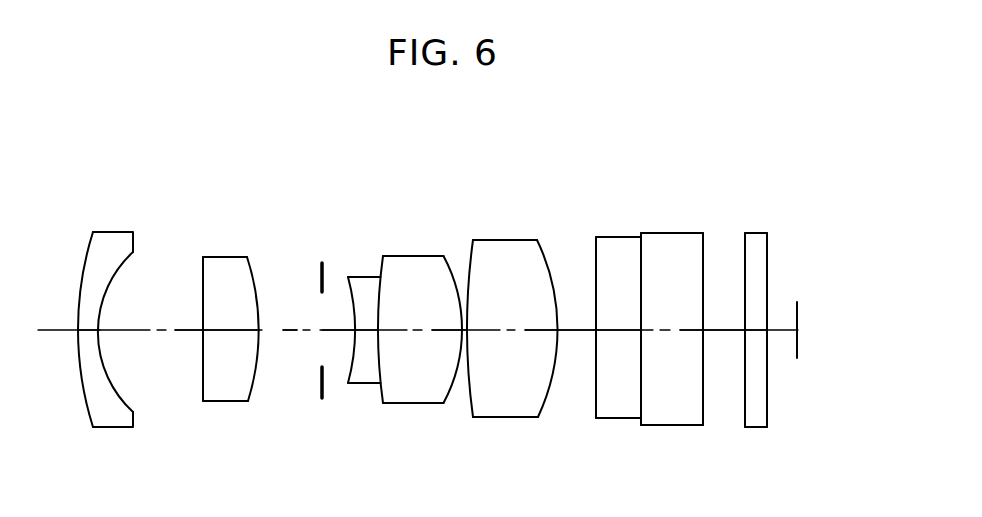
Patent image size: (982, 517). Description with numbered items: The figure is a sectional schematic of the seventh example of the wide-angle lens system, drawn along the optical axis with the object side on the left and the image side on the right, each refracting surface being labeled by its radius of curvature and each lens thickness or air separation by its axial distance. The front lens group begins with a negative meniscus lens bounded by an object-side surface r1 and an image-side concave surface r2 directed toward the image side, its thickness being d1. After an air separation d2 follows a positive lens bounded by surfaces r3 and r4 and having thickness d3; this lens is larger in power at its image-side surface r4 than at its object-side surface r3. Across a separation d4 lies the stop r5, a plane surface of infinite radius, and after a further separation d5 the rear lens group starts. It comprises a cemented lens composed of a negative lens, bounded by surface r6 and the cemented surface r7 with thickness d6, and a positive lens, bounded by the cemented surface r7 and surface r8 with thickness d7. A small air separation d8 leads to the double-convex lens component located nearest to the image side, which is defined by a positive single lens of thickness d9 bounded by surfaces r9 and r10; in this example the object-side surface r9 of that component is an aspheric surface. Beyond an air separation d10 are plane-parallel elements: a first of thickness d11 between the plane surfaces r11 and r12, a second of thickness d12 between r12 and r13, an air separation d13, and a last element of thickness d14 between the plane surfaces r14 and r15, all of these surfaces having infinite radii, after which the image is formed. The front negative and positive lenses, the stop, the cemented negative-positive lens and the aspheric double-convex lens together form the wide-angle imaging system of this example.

The radius of curvature of first lens surface r1 is at (86, 257).
The radius of curvature of second lens surface r2 is at (118, 272).
The radius of curvature of third lens surface r3 is at (203, 277).
The radius of curvature of fourth lens surface r4 is at (252, 278).
The stop r5 is at (320, 273).
The radius of curvature of sixth lens surface r6 is at (352, 297).
The radius of curvature of seventh lens surface r7 is at (380, 290).
The radius of curvature of eighth lens surface r8 is at (454, 283).
The aspheric object-side surface of double-convex lens component r9 is at (469, 272).
The radius of curvature of tenth lens surface r10 is at (543, 258).
The radius of curvature of eleventh lens surface r11 is at (596, 263).
The radius of curvature of twelfth lens surface r12 is at (641, 260).
The radius of curvature of thirteenth lens surface r13 is at (703, 257).
The radius of curvature of fourteenth lens surface r14 is at (745, 253).
The radius of curvature of fifteenth lens surface r15 is at (767, 250).
The thickness of first lens d1 is at (92, 332).
The separation between first and second lenses d2 is at (163, 333).
The thickness of second lens d3 is at (224, 333).
The separation between second lens and stop d4 is at (289, 333).
The separation between stop and cemented lens d5 is at (335, 333).
The thickness of negative lens of cemented lens d6 is at (367, 333).
The thickness of positive lens of cemented lens d7 is at (417, 333).
The separation between cemented lens and double-convex lens d8 is at (462, 333).
The thickness of double-convex lens component d9 is at (510, 333).
The separation between double-convex lens and plane-parallel element d10 is at (573, 333).
The thickness of first plane-parallel element d11 is at (618, 333).
The thickness of second plane-parallel element d12 is at (667, 333).
The separation between plane-parallel elements d13 is at (723, 333).
The thickness of last plane-parallel element d14 is at (757, 333).